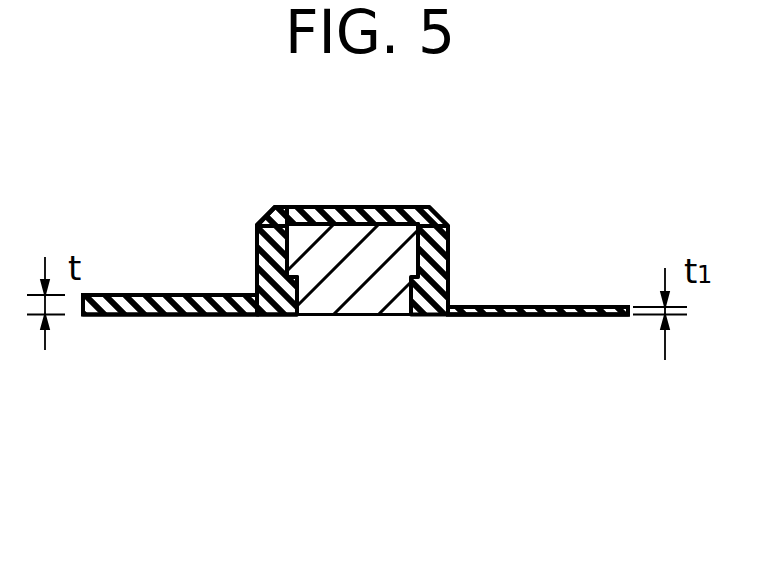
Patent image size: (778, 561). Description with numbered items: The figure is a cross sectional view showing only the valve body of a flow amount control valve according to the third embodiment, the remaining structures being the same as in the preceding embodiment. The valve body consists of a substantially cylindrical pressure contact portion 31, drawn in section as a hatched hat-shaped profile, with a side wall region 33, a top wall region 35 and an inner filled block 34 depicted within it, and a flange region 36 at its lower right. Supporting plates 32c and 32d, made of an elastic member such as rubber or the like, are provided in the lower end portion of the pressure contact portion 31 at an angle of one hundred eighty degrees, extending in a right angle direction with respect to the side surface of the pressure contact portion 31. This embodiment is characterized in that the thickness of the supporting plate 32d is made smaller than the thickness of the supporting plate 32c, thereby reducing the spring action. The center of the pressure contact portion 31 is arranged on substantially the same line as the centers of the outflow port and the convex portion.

The pressure contact portion 31 is at (445, 208).
The side wall 33 is at (266, 247).
The top wall 35 is at (345, 207).
The flange portion 36 is at (487, 300).
The supporting plate 32c is at (182, 314).
The supporting plate 32d is at (533, 314).
The filler block 34 is at (348, 288).